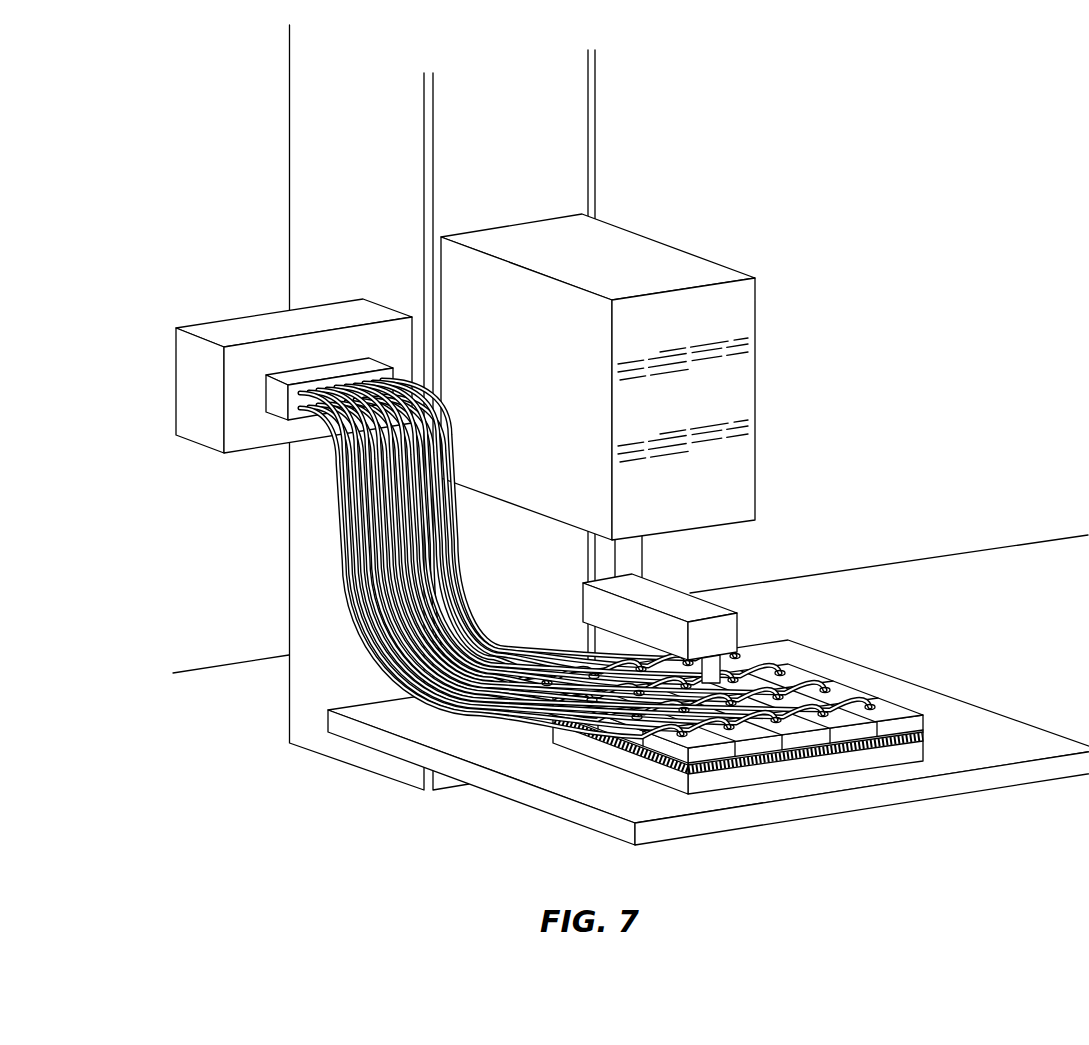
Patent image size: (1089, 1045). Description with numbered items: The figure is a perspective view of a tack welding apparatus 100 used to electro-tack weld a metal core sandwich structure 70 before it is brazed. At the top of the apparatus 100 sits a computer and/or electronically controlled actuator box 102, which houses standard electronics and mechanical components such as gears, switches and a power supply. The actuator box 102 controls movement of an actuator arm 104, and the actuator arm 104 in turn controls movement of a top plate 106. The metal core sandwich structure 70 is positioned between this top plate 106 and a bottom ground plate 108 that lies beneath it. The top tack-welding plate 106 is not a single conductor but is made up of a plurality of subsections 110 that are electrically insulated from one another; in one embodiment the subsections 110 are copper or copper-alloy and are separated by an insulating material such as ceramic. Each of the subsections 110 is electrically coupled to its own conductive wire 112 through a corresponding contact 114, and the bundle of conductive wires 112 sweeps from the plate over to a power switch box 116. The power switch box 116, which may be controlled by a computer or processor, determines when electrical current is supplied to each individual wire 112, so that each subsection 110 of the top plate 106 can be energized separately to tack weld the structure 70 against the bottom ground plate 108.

The tack welding apparatus 100 is at (626, 443).
The actuator box 102 is at (757, 398).
The actuator arm 104 is at (740, 628).
The top plate 106 is at (850, 672).
The bottom ground plate 108 is at (583, 750).
The subsections 110 is at (784, 779).
The conductive wire 112 is at (605, 558).
The contacts 114 is at (887, 712).
The power switch box 116 is at (275, 398).
The metal core sandwich structure 70 is at (822, 762).